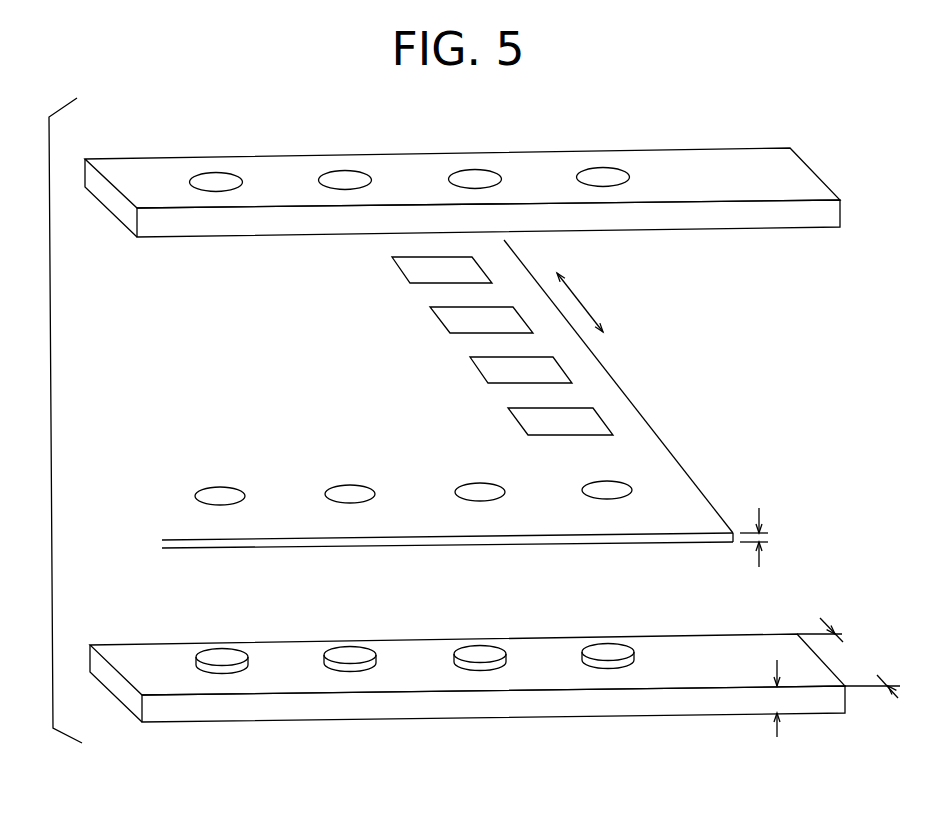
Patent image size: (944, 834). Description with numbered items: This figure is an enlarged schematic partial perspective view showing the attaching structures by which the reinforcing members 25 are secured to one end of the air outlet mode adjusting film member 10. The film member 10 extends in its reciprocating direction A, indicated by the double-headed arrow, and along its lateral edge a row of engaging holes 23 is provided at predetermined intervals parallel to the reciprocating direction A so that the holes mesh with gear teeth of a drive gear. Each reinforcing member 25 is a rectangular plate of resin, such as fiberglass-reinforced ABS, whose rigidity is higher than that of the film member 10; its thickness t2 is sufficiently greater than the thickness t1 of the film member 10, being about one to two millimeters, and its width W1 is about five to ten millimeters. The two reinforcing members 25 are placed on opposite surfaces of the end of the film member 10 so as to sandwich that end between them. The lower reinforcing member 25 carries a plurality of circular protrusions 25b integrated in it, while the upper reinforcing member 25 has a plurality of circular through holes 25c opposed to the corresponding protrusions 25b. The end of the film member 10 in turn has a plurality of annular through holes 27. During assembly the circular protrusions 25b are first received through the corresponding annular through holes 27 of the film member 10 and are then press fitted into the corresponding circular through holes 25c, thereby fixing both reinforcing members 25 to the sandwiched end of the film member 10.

The reinforcing member 25 is at (776, 215).
The circular through hole 25c is at (602, 174).
The circular protrusion 25b is at (607, 653).
The air outlet mode adjusting film member 10 is at (668, 450).
The engaging hole 23 is at (583, 420).
The annular through hole 27 is at (632, 488).
The reciprocating direction A is at (580, 300).
The thickness of the film member t1 is at (767, 537).
The thickness of the reinforcing member t2 is at (779, 698).
The width of the reinforcing member W1 is at (848, 658).